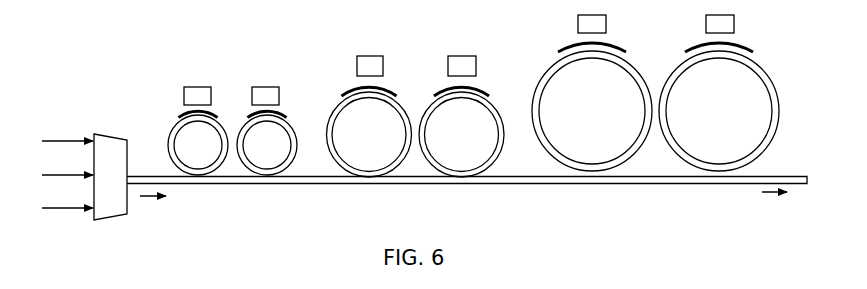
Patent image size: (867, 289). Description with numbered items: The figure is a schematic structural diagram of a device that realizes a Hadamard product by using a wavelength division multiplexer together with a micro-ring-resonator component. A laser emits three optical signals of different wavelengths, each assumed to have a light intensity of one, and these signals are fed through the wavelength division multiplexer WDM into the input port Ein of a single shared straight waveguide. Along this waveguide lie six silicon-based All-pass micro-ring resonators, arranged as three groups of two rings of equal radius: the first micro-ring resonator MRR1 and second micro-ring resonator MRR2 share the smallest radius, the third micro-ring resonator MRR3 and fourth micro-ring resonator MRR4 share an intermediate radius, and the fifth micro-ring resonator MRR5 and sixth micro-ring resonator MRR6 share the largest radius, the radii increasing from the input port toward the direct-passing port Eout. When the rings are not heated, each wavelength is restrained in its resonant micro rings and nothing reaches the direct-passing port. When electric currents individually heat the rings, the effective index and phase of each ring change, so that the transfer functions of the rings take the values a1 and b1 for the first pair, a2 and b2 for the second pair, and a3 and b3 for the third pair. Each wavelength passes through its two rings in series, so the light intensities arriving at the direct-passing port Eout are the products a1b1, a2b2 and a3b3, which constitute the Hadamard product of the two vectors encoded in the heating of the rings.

The wavelength division multiplexer WDM is at (113, 177).
The input port Ein is at (152, 209).
The direct-passing port Eout is at (775, 207).
The first micro-ring resonator MRR1 is at (198, 145).
The second micro-ring resonator MRR2 is at (267, 145).
The third micro-ring resonator MRR3 is at (369, 134).
The fourth micro-ring resonator MRR4 is at (461, 134).
The fifth micro-ring resonator MRR5 is at (592, 111).
The sixth micro-ring resonator MRR6 is at (719, 111).
The transfer function value a1 is at (198, 111).
The transfer function value b1 is at (267, 111).
The transfer function value a2 is at (369, 87).
The transfer function value b2 is at (462, 87).
The transfer function value a3 is at (592, 43).
The transfer function value b3 is at (719, 43).